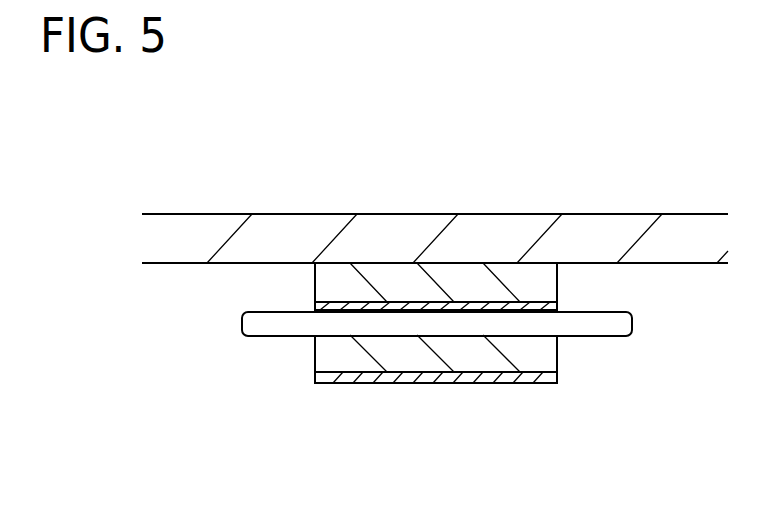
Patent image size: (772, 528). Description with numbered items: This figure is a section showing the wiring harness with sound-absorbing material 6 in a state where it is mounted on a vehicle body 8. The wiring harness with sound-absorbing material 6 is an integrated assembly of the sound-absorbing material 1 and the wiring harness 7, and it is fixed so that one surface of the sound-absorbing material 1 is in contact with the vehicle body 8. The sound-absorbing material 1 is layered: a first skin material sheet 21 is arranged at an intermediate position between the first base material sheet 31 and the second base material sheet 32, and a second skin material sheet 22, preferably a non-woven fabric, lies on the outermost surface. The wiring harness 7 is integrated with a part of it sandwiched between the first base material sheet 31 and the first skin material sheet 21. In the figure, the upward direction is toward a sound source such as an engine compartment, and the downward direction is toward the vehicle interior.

The sound-absorbing material 1 is at (680, 455).
The wiring harness with sound-absorbing material 6 is at (385, 386).
The wiring harness 7 is at (265, 337).
The vehicle body 8 is at (158, 264).
The first skin material sheet 21 is at (565, 312).
The second skin material sheet 22 is at (547, 387).
The first base material sheet 31 is at (557, 357).
The second base material sheet 32 is at (552, 285).